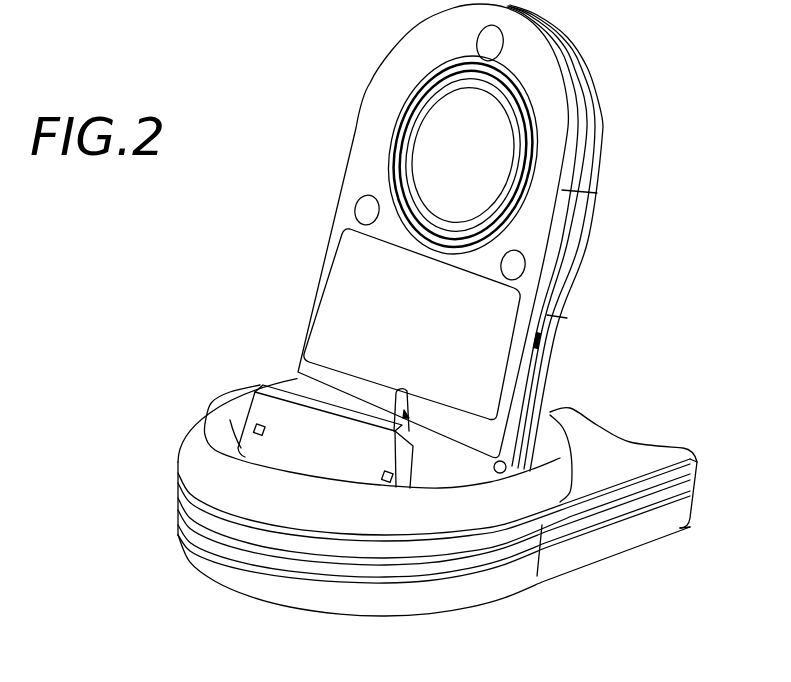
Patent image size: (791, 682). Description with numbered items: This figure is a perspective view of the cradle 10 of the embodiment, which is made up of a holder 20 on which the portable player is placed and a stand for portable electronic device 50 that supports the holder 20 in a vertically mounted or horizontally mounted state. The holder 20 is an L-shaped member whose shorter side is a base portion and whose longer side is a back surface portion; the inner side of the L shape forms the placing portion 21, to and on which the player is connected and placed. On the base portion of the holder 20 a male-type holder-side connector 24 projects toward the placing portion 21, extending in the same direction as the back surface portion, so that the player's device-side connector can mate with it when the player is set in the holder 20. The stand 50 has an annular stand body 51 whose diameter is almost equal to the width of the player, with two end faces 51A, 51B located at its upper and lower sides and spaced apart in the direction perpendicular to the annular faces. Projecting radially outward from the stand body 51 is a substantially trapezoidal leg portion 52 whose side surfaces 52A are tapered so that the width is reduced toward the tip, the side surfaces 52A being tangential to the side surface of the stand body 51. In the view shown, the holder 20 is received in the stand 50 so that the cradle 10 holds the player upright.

The cradle 10 is at (306, 97).
The holder 20 is at (590, 147).
The placing portion 21 is at (363, 293).
The holder-side connector 24 is at (287, 412).
The stand for portable electronic device 50 is at (222, 553).
The stand body 51 is at (497, 596).
The end face 51A is at (229, 421).
The end face 51B is at (288, 609).
The leg portion 52 is at (647, 457).
The side surface 52A is at (662, 523).